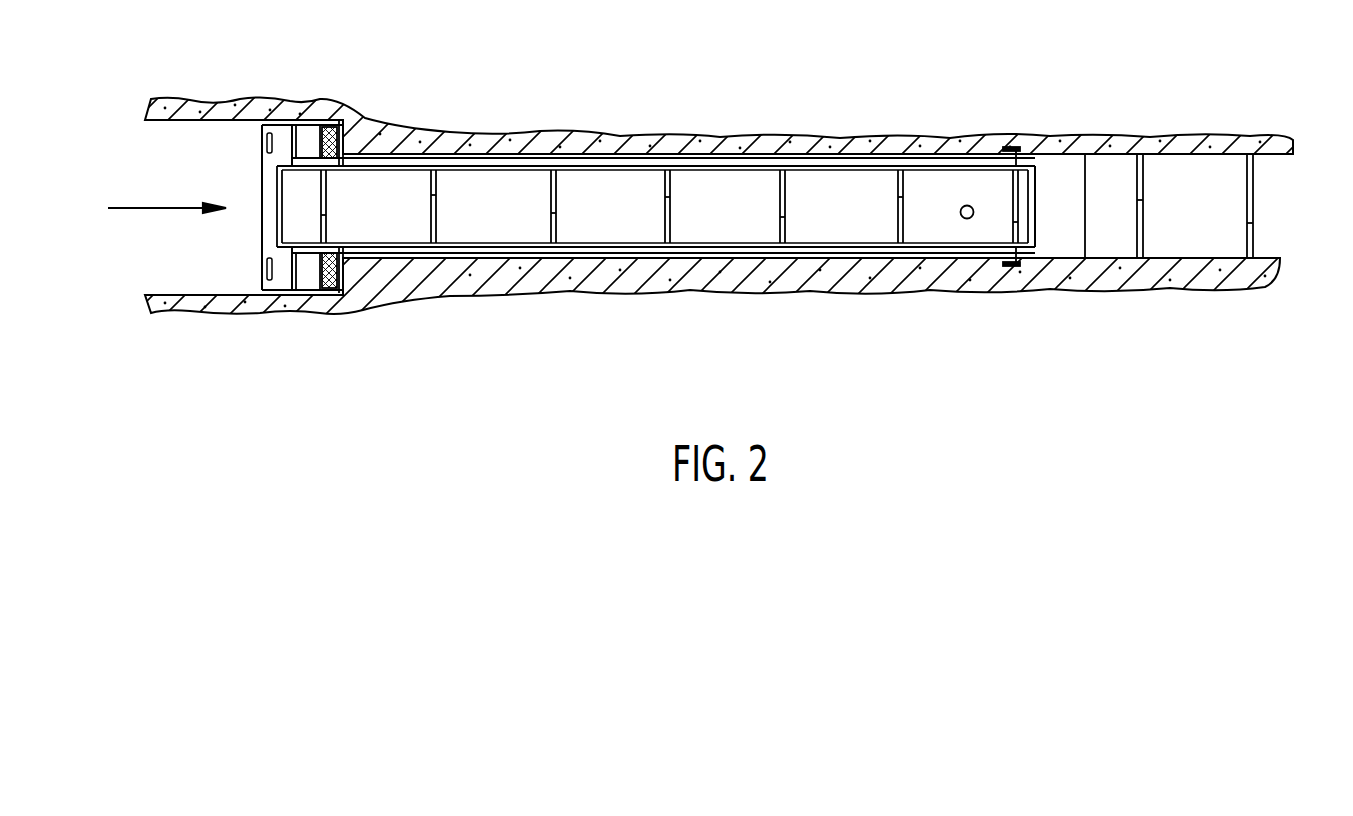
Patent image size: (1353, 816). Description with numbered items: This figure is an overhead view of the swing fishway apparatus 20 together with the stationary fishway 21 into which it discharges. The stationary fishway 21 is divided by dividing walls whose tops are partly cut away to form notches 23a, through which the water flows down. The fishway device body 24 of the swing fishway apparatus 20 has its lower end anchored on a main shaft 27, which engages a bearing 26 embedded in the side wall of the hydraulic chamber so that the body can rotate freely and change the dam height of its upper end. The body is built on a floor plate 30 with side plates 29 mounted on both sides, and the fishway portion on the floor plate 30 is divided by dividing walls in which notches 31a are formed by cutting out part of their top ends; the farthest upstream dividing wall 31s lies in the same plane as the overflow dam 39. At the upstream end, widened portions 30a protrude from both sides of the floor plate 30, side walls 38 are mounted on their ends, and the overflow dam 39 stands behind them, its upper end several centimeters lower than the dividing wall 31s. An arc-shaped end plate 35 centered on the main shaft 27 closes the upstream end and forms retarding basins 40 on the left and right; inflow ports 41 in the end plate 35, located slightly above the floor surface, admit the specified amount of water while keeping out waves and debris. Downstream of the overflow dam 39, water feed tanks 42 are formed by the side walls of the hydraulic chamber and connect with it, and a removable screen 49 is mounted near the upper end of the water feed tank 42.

The swing fishway apparatus 20 is at (679, 128).
The stationary fishway 21 is at (1213, 168).
The notch 23a is at (1138, 182).
The fishway device body 24 is at (529, 170).
The bearing 26 is at (1025, 150).
The main shaft 27 is at (1015, 148).
The side plate 29 is at (590, 160).
The floor plate 30 is at (472, 190).
The widened portion 30a is at (303, 278).
The farthest upstream dividing wall 31s is at (323, 192).
The notch 31a is at (552, 232).
The end plate 35 is at (277, 283).
The side wall 38 is at (327, 288).
The overflow dam 39 is at (312, 277).
The retarding basin 40 is at (307, 148).
The inflow port 41 is at (264, 147).
The water feed tank 42 is at (330, 152).
The screen 49 is at (340, 303).